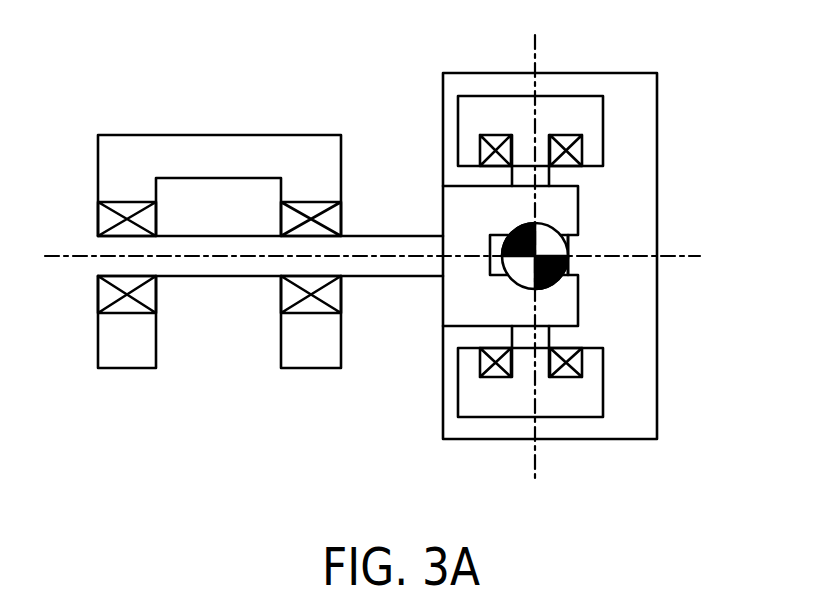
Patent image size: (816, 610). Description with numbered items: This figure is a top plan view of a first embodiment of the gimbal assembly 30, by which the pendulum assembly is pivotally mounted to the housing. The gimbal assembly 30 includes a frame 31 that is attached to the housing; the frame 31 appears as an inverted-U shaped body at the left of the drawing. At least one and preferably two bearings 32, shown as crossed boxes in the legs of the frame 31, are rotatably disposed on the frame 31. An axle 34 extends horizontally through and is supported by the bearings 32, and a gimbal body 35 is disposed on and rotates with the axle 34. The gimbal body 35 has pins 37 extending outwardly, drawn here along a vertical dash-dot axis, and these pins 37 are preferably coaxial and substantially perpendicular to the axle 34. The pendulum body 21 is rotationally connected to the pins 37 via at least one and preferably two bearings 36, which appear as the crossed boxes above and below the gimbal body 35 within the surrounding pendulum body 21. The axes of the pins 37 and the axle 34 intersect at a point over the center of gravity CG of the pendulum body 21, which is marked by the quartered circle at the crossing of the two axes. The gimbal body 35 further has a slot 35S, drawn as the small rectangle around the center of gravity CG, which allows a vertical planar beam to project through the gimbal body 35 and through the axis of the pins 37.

The pendulum body 21 is at (497, 115).
The gimbal assembly 30 is at (373, 430).
The frame 31 is at (219, 132).
The bearings 32 is at (108, 218).
The axle 34 is at (223, 258).
The gimbal body 35 is at (580, 210).
The slot 35S is at (575, 265).
The bearings 36 is at (575, 148).
The pins 37 is at (550, 43).
The center of gravity CG is at (560, 288).